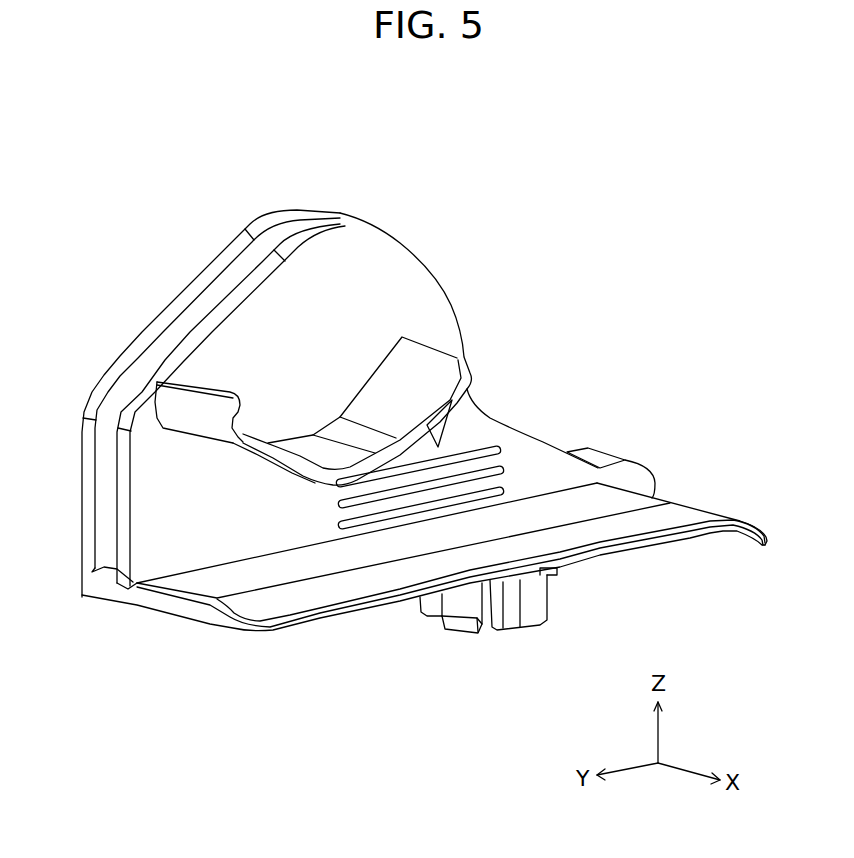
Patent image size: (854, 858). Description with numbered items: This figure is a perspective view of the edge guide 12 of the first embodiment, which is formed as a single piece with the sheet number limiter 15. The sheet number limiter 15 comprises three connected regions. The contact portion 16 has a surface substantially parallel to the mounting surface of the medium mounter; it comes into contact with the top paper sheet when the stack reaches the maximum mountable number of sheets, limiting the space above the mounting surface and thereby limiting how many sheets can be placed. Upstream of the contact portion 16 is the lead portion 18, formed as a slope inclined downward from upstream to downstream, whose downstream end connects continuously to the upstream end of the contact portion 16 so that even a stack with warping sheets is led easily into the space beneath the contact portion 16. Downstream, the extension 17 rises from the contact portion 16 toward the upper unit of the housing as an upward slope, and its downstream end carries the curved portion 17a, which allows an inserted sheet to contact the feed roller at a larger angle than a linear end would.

The edge guide 12 is at (212, 202).
The sheet number limiter 15 is at (325, 318).
The contact portion 16 is at (330, 488).
The extension 17 is at (242, 453).
The curved portion 17a is at (193, 427).
The lead portion 18 is at (435, 370).